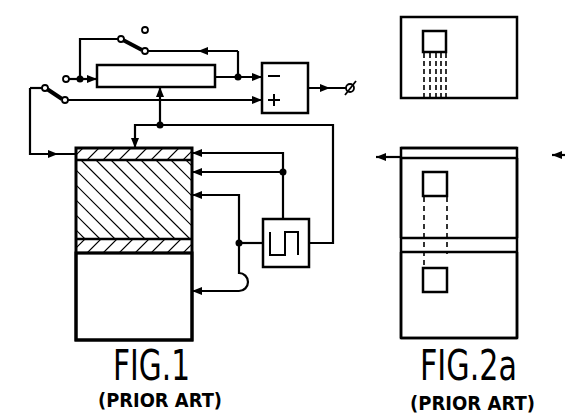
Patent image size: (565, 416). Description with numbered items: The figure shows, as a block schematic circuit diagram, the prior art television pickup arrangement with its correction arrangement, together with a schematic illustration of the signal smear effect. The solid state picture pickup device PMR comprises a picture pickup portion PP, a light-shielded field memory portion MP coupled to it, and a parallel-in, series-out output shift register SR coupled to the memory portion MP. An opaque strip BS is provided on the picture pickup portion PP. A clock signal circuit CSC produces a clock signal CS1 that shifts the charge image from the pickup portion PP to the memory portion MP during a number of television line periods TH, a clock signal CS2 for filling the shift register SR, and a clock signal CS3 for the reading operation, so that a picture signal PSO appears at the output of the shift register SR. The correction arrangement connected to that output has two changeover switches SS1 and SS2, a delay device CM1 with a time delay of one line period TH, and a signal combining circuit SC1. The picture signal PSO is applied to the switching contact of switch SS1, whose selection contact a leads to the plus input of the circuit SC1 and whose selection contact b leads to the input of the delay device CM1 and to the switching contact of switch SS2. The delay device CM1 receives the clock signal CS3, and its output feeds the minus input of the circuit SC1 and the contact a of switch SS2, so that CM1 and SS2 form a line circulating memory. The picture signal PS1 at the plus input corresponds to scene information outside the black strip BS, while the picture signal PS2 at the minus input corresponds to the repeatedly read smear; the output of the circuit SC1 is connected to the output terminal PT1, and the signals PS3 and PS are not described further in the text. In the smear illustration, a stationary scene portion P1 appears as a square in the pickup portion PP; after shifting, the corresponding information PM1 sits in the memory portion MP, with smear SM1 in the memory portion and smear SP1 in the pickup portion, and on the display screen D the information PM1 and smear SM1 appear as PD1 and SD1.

In FIG. 1, the changeover switch SS1 is at (44, 86).
In FIG. 1, the changeover switch SS2 is at (119, 37).
In FIG. 1, the television line period TH is at (142, 77).
In FIG. 1, the delay device CM1 is at (142, 96).
In FIG. 1, the picture signal PS1 is at (256, 102).
In FIG. 1, the picture signal PS2 is at (252, 73).
In FIG. 1, the third signal path PS3 is at (336, 73).
In FIG. 1, the signal combining circuit SC1 is at (280, 63).
In FIG. 1, the output terminal PT1 is at (350, 93).
In FIG. 1, the output shift register SR is at (107, 148).
In FIG. 2A, the output shift register SR is at (517, 153).
In FIG. 1, the picture signal PSO is at (53, 139).
In FIG. 2A, the picture signal PSO is at (384, 169).
In FIG. 1, the field memory portion MP is at (76, 204).
In FIG. 2A, the field memory portion MP is at (517, 197).
In FIG. 1, the solid state picture pickup device PMR is at (61, 251).
In FIG. 1, the picture pickup portion PP is at (76, 300).
In FIG. 2A, the picture pickup portion PP is at (517, 292).
In FIG. 1, the opaque strip BS is at (192, 248).
In FIG. 2A, the opaque strip BS is at (517, 246).
In FIG. 1, the clock signal CS1 is at (227, 256).
In FIG. 1, the clock signal CS2 is at (283, 202).
In FIG. 1, the clock signal CS3 is at (333, 143).
In FIG. 1, the clock signal circuit CSC is at (293, 268).
In FIG. 2A, the display screen D is at (517, 87).
In FIG. 2A, the displayed information PD1 is at (446, 40).
In FIG. 2A, the displayed smear SD1 is at (440, 80).
In FIG. 2A, the information PM1 is at (440, 185).
In FIG. 2A, the smear SM1 is at (438, 222).
In FIG. 2A, the smear SP1 is at (438, 262).
In FIG. 2A, the stationary scene portion P1 is at (440, 282).
In FIG. 2A, the signal path PS is at (559, 150).